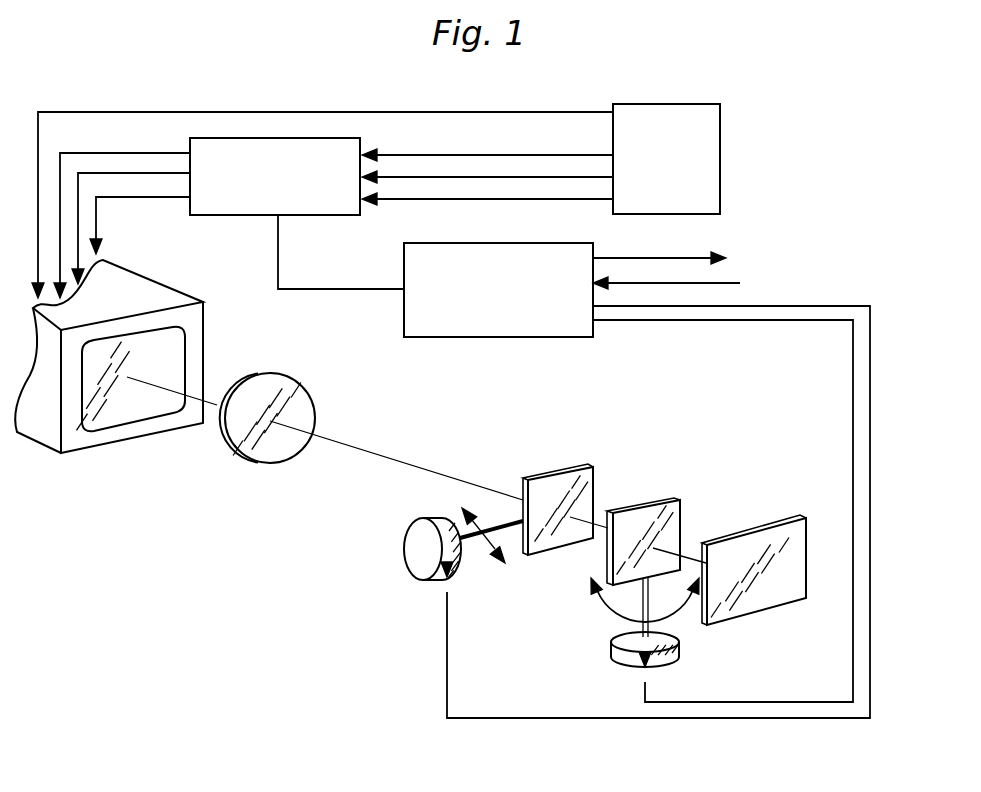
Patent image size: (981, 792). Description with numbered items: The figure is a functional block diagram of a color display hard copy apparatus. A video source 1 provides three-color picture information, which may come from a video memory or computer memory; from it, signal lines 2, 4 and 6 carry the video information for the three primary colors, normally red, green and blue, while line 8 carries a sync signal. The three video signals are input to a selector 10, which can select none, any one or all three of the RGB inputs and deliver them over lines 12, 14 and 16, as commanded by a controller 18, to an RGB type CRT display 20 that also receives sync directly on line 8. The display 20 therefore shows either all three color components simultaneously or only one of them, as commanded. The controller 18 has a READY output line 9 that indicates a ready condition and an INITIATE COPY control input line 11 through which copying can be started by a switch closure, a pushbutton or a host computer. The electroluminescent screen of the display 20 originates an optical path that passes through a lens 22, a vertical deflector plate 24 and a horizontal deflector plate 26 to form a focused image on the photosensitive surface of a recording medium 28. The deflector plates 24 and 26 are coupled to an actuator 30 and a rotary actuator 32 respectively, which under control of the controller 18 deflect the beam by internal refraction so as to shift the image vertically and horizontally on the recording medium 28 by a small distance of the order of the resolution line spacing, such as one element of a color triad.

The video source 1 is at (622, 214).
The signal line 2 is at (518, 202).
The signal line 4 is at (458, 180).
The signal line 6 is at (443, 152).
The sync line 8 is at (370, 115).
The READY output line 9 is at (690, 257).
The selector 10 is at (303, 218).
The INITIATE COPY control input line 11 is at (730, 282).
The line 12 is at (128, 198).
The line 14 is at (128, 173).
The line 16 is at (70, 153).
The controller 18 is at (530, 338).
The RGB type CRT display 20 is at (165, 282).
The lens 22 is at (263, 373).
The vertical deflector plate 24 is at (563, 472).
The horizontal deflector plate 26 is at (653, 498).
The recording medium 28 is at (768, 612).
The actuator 30 is at (404, 540).
The rotary actuator 32 is at (608, 640).